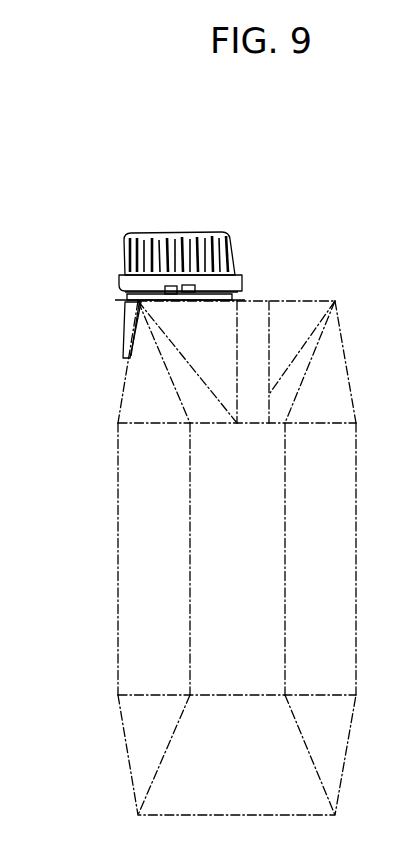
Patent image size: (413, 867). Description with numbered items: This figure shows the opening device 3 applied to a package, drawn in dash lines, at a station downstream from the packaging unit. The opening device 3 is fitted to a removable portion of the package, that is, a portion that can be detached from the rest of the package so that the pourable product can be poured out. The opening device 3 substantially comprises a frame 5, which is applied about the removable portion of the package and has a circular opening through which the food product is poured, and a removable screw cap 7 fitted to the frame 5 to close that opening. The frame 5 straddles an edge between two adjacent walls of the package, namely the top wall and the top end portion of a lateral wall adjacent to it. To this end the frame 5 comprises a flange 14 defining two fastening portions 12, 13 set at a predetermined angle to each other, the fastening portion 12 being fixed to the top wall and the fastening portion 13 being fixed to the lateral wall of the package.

The opening device 3 is at (200, 214).
The removable screw cap 7 is at (228, 243).
The frame 5 is at (118, 293).
The fastening portion 12 is at (213, 312).
The flange 14 is at (128, 306).
The fastening portion 13 is at (138, 345).